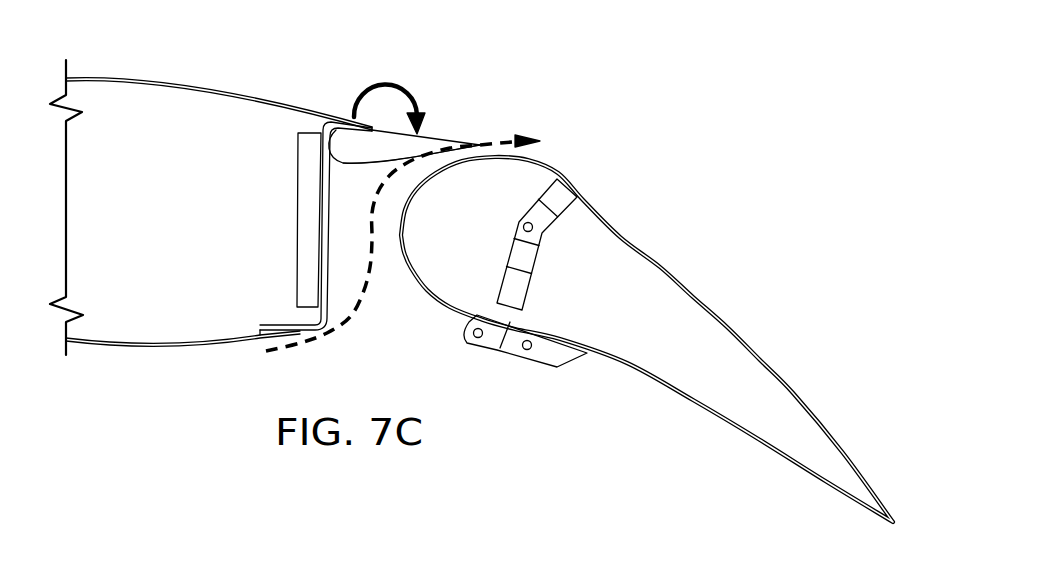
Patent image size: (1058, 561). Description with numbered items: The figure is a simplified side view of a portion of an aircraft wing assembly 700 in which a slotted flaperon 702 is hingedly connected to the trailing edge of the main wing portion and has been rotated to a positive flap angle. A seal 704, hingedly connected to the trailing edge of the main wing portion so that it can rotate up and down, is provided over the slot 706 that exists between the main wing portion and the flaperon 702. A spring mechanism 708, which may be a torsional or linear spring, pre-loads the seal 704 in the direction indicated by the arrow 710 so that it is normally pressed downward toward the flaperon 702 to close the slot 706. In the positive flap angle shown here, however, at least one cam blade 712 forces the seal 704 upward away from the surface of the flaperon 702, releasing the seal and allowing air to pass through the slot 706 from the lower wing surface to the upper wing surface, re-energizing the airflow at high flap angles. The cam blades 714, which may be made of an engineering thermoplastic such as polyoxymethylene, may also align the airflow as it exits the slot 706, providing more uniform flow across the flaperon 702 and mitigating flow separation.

The aircraft wing assembly 700 is at (149, 79).
The slotted flaperon 702 is at (684, 275).
The seal 704 is at (445, 139).
The slot 706 is at (379, 171).
The spring mechanism 708 is at (347, 117).
The arrow 710 is at (388, 86).
The cam blade 712 is at (450, 150).
The cam blades 714 is at (554, 262).